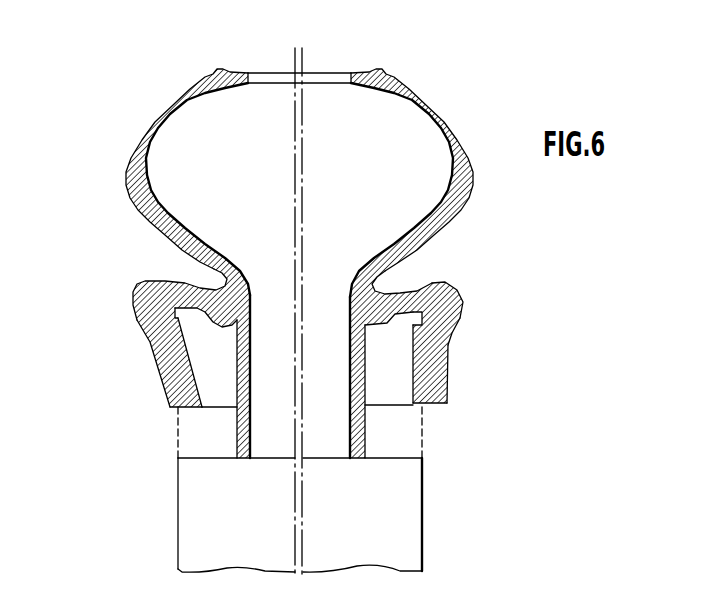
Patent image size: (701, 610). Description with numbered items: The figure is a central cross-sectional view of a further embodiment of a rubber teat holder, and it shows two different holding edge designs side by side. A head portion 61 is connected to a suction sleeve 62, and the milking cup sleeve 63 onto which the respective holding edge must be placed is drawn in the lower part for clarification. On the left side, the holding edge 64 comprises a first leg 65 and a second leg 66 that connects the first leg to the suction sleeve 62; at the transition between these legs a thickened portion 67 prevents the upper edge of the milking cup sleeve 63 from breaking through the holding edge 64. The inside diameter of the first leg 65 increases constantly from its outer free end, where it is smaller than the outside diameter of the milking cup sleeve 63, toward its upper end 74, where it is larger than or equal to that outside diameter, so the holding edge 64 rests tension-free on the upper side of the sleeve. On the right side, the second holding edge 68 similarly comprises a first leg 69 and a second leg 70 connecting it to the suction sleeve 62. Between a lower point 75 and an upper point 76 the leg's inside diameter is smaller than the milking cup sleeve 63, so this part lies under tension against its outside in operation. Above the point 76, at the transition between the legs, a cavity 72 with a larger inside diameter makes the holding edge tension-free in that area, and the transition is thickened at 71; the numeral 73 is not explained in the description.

The head portion 61 is at (420, 98).
The suction sleeve 62 is at (366, 434).
The milking cup sleeve 63 is at (423, 503).
The holding edge 64 is at (131, 346).
The first leg 65 is at (168, 392).
The second leg 66 is at (251, 336).
The thickened portion 67 is at (150, 296).
The holding edge 68 is at (472, 376).
The first leg 69 is at (449, 398).
The second leg 70 is at (400, 292).
The thickened transition 71 is at (462, 288).
The cavity 72 is at (453, 329).
The left recess 73 is at (203, 408).
The upper end 74 is at (179, 318).
The lower point 75 is at (412, 402).
The upper point 76 is at (418, 315).